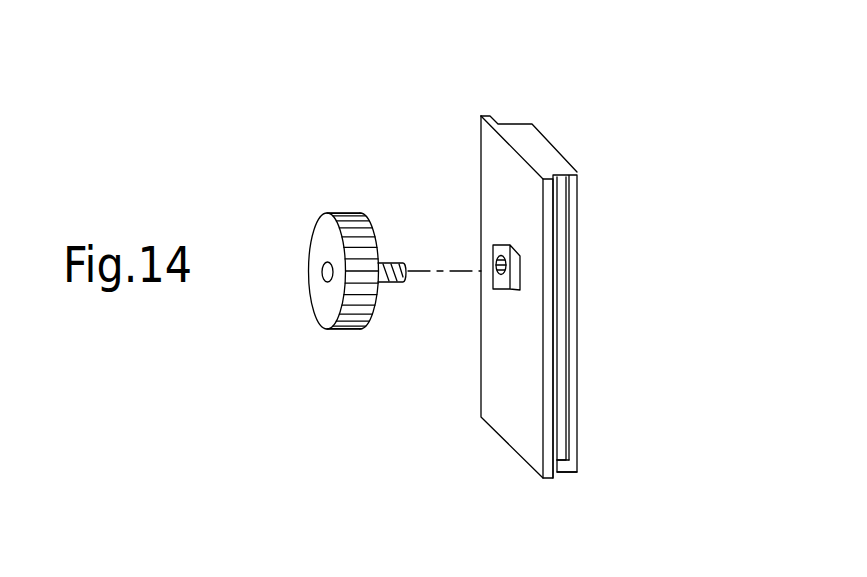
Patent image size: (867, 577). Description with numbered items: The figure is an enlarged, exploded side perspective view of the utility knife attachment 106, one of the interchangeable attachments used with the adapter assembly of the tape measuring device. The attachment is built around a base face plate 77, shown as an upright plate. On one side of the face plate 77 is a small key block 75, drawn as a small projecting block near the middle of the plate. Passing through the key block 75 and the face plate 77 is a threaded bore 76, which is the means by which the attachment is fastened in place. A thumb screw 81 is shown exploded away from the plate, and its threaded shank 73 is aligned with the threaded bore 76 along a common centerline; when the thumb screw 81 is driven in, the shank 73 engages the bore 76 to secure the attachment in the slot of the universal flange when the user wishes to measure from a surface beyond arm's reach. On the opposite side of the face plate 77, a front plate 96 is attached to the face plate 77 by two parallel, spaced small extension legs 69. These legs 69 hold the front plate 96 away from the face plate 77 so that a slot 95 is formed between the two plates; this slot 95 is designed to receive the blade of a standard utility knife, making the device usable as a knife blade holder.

The thumb screw 81 is at (342, 215).
The threaded shank 73 is at (397, 261).
The base face plate 77 is at (520, 415).
The front plate 96 is at (575, 275).
The slot 95 is at (561, 306).
The extension legs 69 is at (568, 476).
The key block 75 is at (506, 283).
The threaded bore 76 is at (503, 279).
The utility knife attachment 106 is at (592, 240).